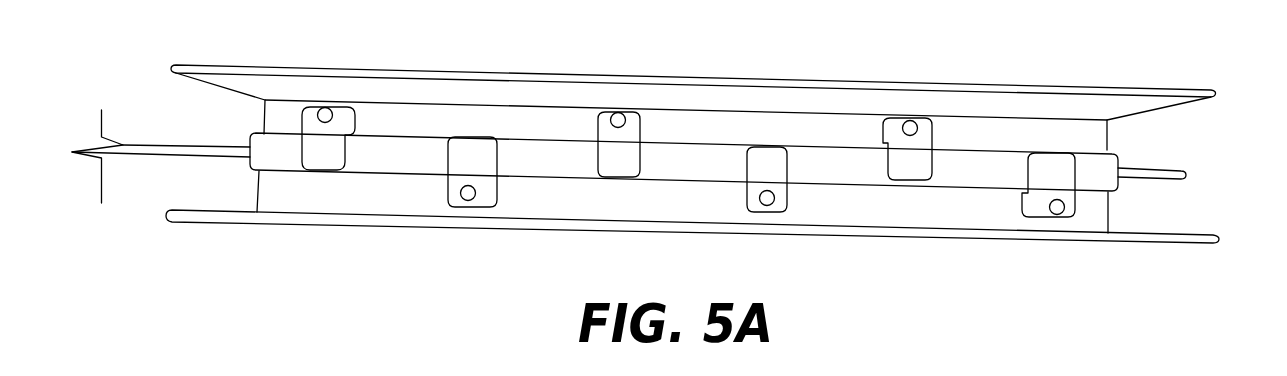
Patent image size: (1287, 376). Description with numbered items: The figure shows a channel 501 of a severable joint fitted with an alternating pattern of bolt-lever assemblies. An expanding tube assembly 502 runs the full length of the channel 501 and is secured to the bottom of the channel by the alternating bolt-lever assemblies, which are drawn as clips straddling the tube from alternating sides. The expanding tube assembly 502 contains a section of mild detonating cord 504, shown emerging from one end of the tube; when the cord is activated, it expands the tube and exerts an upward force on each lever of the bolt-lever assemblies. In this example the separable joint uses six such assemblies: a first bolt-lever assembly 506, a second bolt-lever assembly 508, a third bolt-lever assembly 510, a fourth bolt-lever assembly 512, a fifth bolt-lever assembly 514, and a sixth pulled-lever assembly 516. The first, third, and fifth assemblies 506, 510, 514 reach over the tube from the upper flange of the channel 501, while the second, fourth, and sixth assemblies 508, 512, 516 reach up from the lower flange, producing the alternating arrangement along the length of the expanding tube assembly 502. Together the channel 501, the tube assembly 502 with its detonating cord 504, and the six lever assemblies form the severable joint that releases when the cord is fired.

The channel 501 is at (172, 67).
The expanding tube assembly 502 is at (248, 162).
The mild detonating cord 504 is at (1186, 175).
The first bolt-lever assembly 506 is at (324, 107).
The second bolt-lever assembly 508 is at (469, 201).
The third bolt-lever assembly 510 is at (619, 112).
The fourth bolt-lever assembly 512 is at (768, 206).
The fifth bolt-lever assembly 514 is at (908, 120).
The sixth pulled-lever assembly 516 is at (1044, 217).